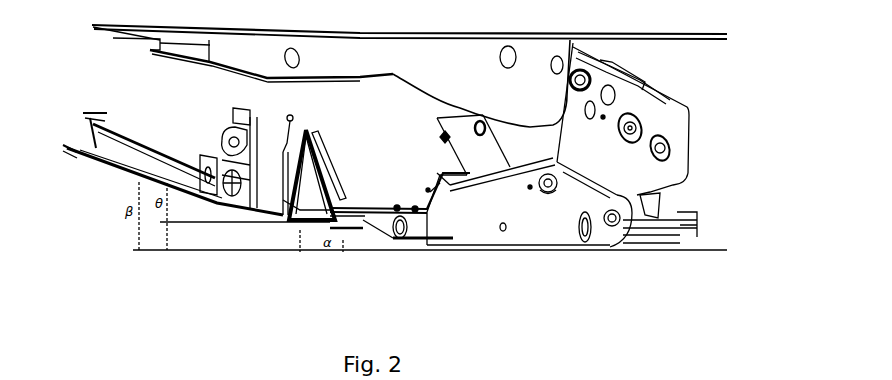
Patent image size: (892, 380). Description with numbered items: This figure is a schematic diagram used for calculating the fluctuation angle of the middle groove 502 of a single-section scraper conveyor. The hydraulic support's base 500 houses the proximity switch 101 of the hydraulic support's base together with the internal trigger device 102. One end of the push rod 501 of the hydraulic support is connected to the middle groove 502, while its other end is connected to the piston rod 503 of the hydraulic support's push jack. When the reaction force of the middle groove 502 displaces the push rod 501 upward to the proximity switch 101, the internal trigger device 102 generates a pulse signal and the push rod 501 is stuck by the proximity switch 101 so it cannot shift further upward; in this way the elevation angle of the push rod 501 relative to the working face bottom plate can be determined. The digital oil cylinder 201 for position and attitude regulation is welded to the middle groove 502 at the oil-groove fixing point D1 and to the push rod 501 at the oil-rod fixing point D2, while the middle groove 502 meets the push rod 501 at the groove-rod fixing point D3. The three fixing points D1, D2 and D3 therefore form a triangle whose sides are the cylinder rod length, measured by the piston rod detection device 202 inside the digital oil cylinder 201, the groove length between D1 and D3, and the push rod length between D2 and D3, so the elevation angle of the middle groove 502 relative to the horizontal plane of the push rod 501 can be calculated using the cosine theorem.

The base of the hydraulic support 500 is at (522, 227).
The push rod of the hydraulic support 501 is at (360, 240).
The middle groove of the single-section scraper conveyor 502 is at (287, 140).
The piston rod of the hydraulic support's push jack 503 is at (393, 240).
The proximity switch of the hydraulic support's base 101 is at (388, 208).
The internal trigger device 102 is at (397, 206).
The digital oil cylinder for position and attitude regulation of the single-section 201 is at (330, 163).
The piston rod detection device of the digital oil cylinder 202 is at (293, 200).
The oil-groove fixing point D1 is at (310, 128).
The oil-rod fixing point D2 is at (343, 215).
The groove-rod fixing point D3 is at (290, 220).